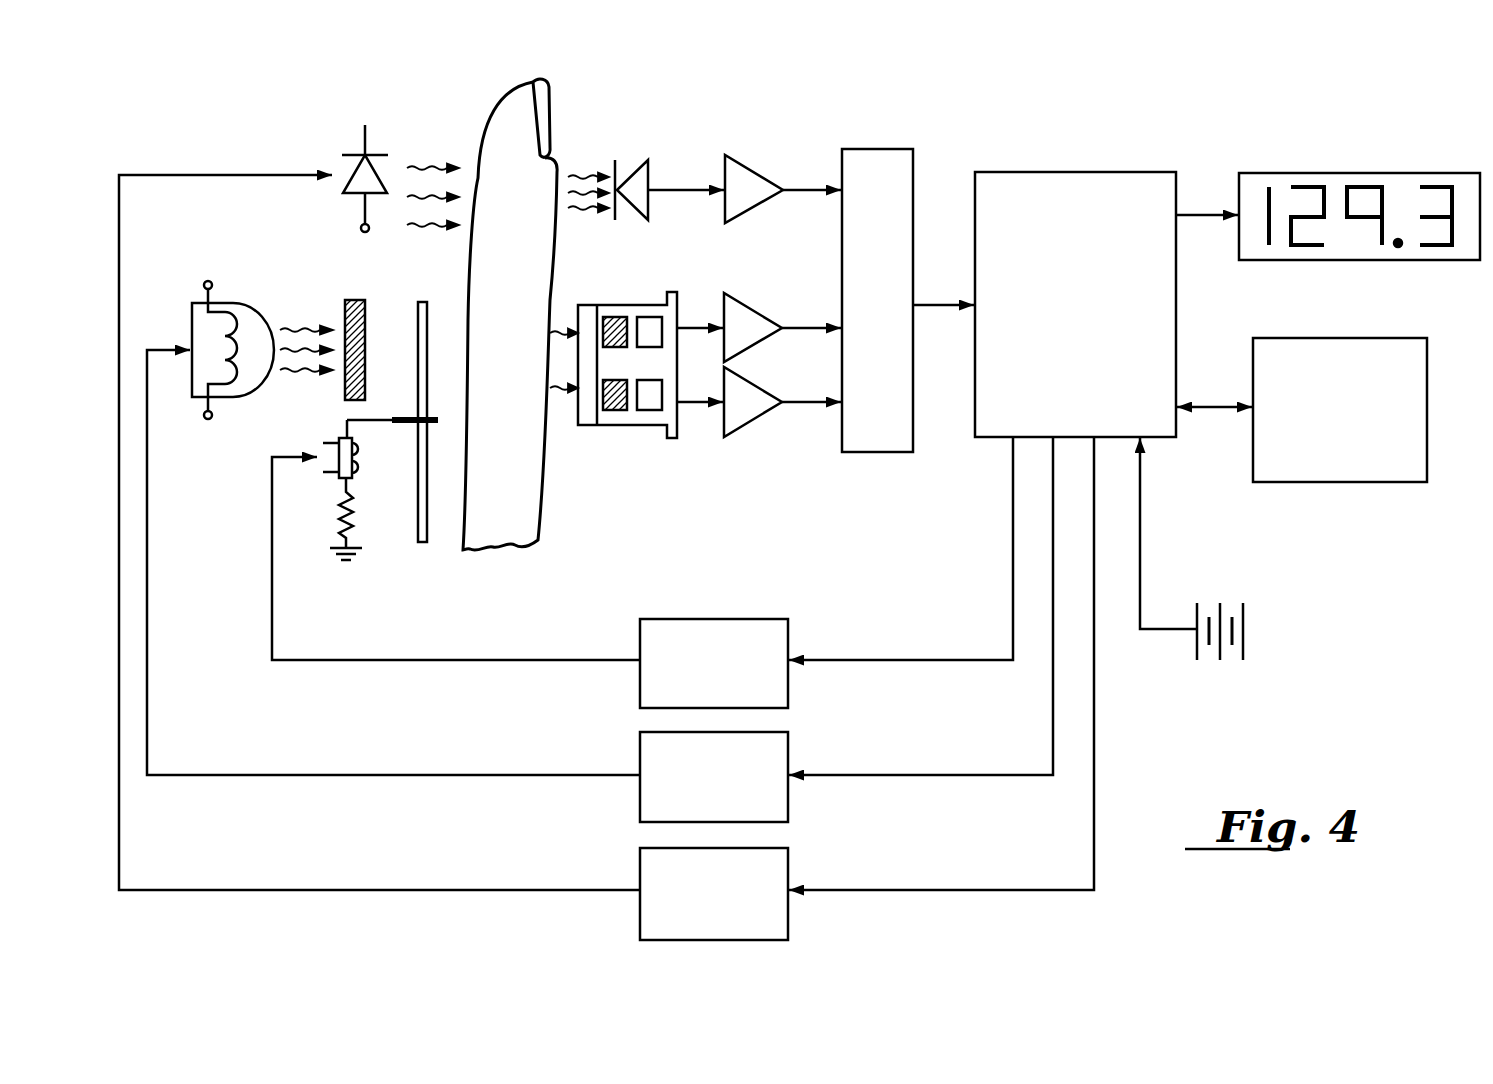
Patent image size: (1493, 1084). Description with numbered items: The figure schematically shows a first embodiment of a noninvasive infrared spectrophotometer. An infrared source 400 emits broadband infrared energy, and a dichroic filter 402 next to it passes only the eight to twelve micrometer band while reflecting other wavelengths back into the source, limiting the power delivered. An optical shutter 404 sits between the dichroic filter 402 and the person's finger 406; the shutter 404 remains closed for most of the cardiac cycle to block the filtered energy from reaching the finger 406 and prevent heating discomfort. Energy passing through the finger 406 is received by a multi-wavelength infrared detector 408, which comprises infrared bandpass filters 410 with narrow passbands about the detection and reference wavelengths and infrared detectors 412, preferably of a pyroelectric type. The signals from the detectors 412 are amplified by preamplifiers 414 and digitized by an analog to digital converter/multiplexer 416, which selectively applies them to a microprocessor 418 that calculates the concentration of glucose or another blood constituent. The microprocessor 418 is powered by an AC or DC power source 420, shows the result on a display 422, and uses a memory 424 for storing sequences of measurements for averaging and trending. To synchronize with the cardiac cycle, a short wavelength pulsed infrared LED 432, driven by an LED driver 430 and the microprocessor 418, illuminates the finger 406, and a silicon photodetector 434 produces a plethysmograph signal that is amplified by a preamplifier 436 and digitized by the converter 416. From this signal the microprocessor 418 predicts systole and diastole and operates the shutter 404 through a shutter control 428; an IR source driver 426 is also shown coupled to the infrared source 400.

The infrared source 400 is at (193, 300).
The dichroic filter 402 is at (345, 306).
The optical shutter 404 is at (417, 535).
The finger 406 is at (525, 532).
The multi-wavelength infrared detector 408 is at (678, 437).
The infrared bandpass filters 410 is at (612, 345).
The infrared detectors 412 is at (655, 392).
The preamplifiers 414 is at (757, 333).
The analog to digital converter/multiplexer 416 is at (906, 170).
The microprocessor 418 is at (1106, 185).
The power source 420 is at (1261, 550).
The display 422 is at (1342, 255).
The memory 424 is at (1380, 470).
The IR source driver 426 is at (782, 758).
The shutter control 428 is at (783, 640).
The LED driver 430 is at (780, 875).
The infrared LED 432 is at (353, 151).
The photodetector 434 is at (635, 167).
The preamplifier 436 is at (746, 178).